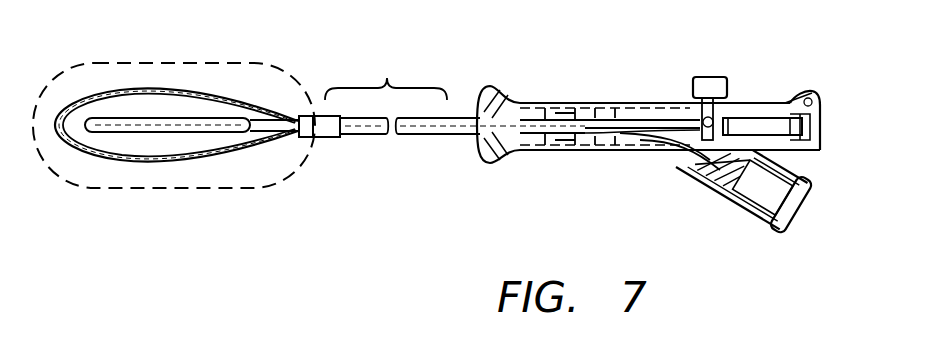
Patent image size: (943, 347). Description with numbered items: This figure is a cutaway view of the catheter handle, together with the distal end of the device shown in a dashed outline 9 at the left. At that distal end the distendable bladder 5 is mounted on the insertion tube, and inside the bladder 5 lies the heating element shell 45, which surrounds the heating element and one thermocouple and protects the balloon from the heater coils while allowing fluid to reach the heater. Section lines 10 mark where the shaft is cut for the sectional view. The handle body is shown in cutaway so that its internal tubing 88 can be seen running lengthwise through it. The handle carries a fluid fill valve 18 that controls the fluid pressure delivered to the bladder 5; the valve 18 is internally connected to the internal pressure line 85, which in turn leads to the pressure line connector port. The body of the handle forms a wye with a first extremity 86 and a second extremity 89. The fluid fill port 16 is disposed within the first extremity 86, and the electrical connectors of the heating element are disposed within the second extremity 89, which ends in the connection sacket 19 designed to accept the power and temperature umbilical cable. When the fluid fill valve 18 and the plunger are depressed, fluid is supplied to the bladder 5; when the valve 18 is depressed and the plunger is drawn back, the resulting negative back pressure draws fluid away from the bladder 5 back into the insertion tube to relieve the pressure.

The distendable bladder 5 is at (135, 88).
The distal end region 9 is at (172, 190).
The heating element shell 45 is at (115, 135).
The handle body / section line 10 is at (445, 60).
The inner tube 88 is at (615, 105).
The internal pressure line 85 is at (680, 160).
The fluid fill valve 18 is at (706, 75).
The first extremity 86 is at (815, 108).
The fluid fill port 16 is at (825, 132).
The second extremity 89 is at (805, 210).
The connection sacket 19 is at (783, 230).